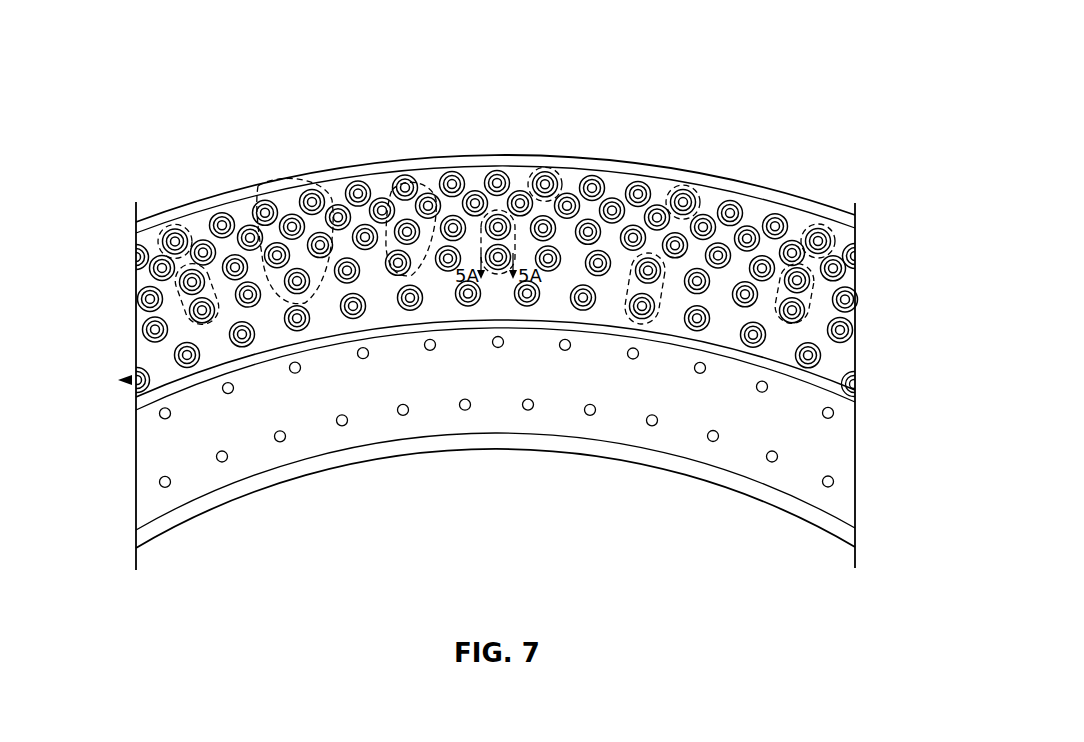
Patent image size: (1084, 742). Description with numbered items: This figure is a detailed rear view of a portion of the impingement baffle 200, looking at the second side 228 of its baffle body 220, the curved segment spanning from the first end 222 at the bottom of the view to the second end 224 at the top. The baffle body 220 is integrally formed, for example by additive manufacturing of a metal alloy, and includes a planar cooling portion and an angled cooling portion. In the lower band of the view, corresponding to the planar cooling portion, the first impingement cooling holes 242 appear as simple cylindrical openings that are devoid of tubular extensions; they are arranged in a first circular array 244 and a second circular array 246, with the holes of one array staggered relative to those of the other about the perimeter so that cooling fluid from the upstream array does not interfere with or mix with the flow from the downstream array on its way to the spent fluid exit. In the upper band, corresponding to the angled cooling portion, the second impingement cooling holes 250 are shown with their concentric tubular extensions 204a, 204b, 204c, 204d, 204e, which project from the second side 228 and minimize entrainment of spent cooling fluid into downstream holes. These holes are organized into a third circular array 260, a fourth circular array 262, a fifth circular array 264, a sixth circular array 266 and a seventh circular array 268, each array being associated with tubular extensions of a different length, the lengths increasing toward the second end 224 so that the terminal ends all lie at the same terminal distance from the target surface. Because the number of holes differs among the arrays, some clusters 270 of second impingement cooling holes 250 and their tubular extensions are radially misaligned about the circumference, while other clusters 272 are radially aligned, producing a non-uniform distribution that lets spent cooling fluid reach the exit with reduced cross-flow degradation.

The impingement baffle 200 is at (876, 44).
The baffle body 220 is at (852, 122).
The first end 222 is at (838, 540).
The second end 224 is at (858, 218).
The second side 228 is at (846, 388).
The first impingement cooling holes 242 is at (840, 478).
The first circular array 244 is at (846, 490).
The second circular array 246 is at (845, 418).
The second impingement cooling holes 250 is at (731, 204).
The third circular array 260 is at (848, 356).
The fourth circular array 262 is at (864, 326).
The fifth circular array 264 is at (864, 296).
The sixth circular array 266 is at (862, 272).
The seventh circular array 268 is at (856, 204).
The clusters (radially misaligned) 270 is at (286, 183).
The clusters (radially aligned) 272 is at (183, 226).
The tubular extension 204a is at (165, 360).
The tubular extension 204b is at (134, 340).
The tubular extension 204c is at (134, 308).
The tubular extension 204d is at (146, 275).
The tubular extension 204e is at (150, 243).